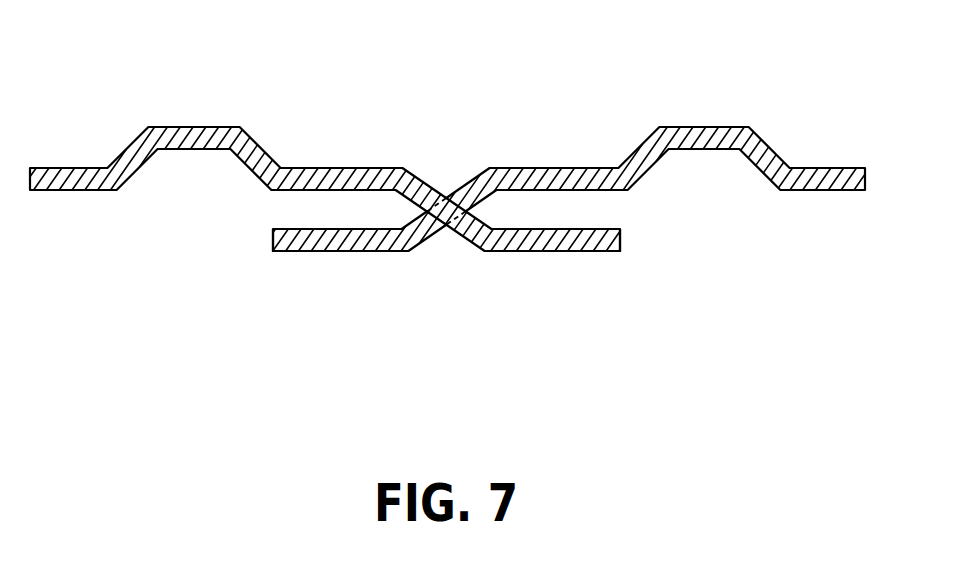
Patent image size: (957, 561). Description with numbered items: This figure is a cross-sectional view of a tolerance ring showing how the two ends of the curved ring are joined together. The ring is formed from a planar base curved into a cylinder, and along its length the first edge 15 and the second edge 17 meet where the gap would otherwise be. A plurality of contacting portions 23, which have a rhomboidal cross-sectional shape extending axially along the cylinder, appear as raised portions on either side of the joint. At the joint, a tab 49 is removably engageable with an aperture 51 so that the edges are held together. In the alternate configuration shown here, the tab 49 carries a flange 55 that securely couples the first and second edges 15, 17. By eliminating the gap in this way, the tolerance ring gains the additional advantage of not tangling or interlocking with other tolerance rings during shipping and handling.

The first edge 15 is at (551, 168).
The second edge 17 is at (322, 168).
The contacting portions 23 is at (178, 127).
The tab 49 is at (461, 234).
The aperture 51 is at (458, 198).
The flange 55 is at (547, 254).